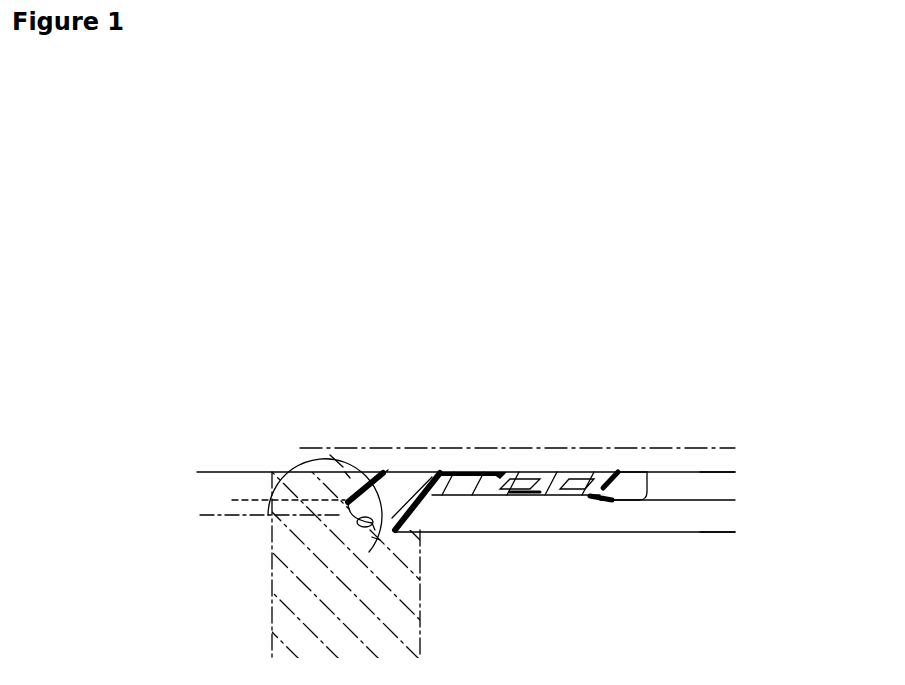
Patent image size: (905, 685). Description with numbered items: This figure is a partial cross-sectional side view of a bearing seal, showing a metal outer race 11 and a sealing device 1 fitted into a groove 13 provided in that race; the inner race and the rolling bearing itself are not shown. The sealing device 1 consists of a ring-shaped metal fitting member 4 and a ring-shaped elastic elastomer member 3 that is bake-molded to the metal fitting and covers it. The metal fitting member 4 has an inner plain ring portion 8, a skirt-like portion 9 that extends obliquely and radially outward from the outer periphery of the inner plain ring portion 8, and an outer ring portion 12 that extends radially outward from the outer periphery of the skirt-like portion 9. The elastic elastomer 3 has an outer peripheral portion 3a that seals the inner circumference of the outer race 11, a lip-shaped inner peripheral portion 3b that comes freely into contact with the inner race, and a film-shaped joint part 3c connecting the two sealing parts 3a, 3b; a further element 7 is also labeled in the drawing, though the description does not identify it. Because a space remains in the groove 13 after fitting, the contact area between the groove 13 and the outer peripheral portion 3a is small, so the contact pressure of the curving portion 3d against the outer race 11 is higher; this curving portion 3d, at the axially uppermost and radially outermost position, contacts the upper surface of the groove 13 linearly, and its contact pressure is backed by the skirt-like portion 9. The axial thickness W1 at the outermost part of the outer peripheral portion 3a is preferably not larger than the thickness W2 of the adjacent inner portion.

The sealing device 1 is at (582, 472).
The elastic elastomer member 3 is at (452, 472).
The outer peripheral portion 3a is at (387, 472).
The inner peripheral portion 3b is at (613, 487).
The film-shaped joint part 3c is at (515, 472).
The curving portion 3d is at (352, 473).
The metal fitting member 4 is at (475, 470).
The electrode 7 is at (627, 488).
The inner plain ring portion 8 is at (527, 495).
The skirt-like portion 9 is at (430, 505).
The outer race 11 is at (287, 472).
The outer ring portion 12 is at (372, 537).
The groove 13 is at (369, 552).
The thickness at the outermost portion of the outer peripheral portion W1 is at (243, 435).
The thickness of an adjacent inner portion W2 is at (213, 437).